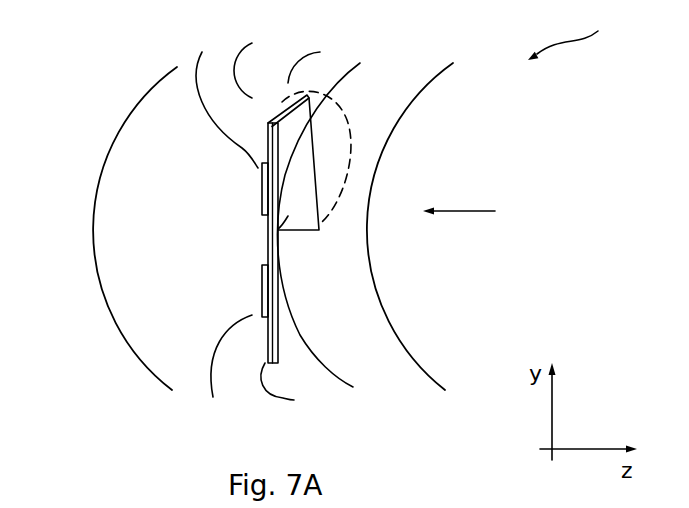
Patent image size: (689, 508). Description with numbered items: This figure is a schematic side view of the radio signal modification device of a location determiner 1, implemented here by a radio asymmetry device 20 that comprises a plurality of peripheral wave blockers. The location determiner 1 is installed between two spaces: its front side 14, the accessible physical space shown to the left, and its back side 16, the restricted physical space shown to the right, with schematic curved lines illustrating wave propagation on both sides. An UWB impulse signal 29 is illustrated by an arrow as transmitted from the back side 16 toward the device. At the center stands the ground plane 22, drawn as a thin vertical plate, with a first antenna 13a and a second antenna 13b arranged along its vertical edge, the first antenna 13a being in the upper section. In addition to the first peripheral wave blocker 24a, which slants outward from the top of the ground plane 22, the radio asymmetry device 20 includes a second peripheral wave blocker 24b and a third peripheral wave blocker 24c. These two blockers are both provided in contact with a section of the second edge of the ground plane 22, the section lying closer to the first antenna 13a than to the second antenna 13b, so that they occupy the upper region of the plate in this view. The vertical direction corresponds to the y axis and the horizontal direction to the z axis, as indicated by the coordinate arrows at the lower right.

The location determiner 1 is at (571, 35).
The first antenna 13a is at (262, 203).
The second antenna 13b is at (262, 296).
The front side 14 is at (52, 274).
The back side 16 is at (538, 294).
The radio asymmetry device 20 is at (346, 125).
The ground plane 22 is at (279, 298).
The first peripheral wave blocker 24a is at (280, 110).
The second peripheral wave blocker 24b is at (278, 229).
The third peripheral wave blocker 24c is at (303, 234).
The UWB impulse signal 29 is at (476, 214).